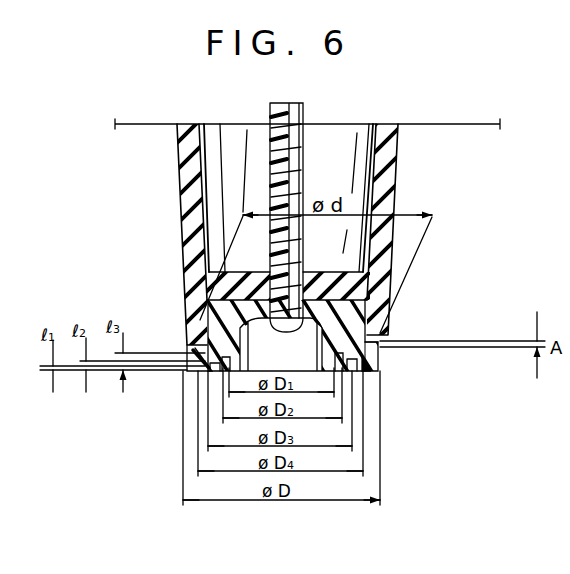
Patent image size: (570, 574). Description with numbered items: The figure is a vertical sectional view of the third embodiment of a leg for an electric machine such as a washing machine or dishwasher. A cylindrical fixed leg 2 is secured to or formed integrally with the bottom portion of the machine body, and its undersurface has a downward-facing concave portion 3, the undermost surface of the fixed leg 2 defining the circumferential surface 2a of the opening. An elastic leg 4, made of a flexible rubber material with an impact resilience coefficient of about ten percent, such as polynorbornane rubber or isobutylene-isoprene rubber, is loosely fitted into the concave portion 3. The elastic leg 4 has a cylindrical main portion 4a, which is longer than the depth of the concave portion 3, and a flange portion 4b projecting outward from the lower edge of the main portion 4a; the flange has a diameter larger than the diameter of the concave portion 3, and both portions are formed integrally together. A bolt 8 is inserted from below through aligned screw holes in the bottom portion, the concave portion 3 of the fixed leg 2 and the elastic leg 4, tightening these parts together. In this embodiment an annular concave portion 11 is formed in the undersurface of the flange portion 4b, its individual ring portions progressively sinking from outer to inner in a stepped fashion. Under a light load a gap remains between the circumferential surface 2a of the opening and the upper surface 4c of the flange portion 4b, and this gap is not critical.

The fixed leg 2 is at (388, 177).
The circumferential surface of the opening 2a is at (188, 343).
The concave portion 3 is at (370, 308).
The elastic leg 4 is at (322, 307).
The main portion 4a is at (372, 351).
The flange portion 4b is at (372, 367).
The upper surface of the flange portion 4c is at (207, 361).
The bolt 8 is at (300, 161).
The annular concave portion 11 is at (281, 350).